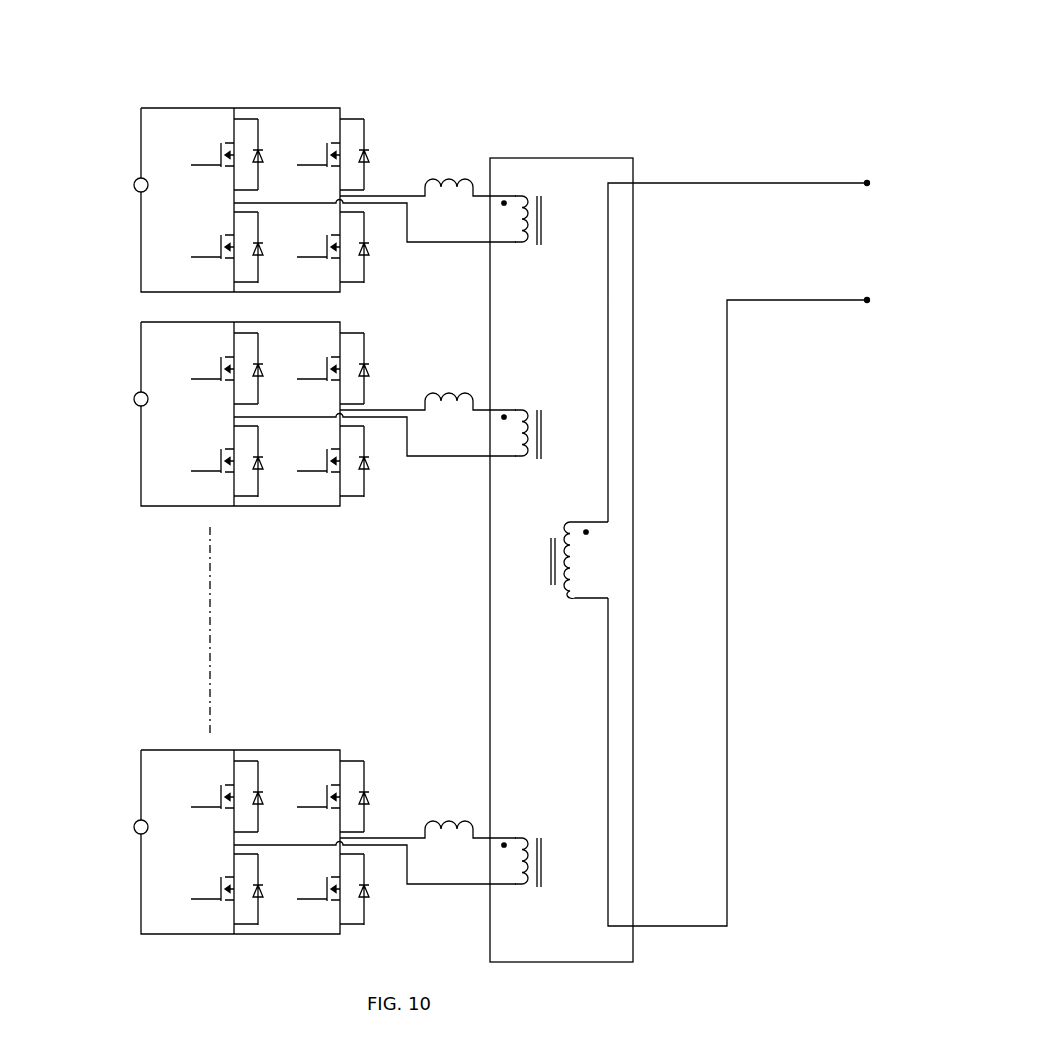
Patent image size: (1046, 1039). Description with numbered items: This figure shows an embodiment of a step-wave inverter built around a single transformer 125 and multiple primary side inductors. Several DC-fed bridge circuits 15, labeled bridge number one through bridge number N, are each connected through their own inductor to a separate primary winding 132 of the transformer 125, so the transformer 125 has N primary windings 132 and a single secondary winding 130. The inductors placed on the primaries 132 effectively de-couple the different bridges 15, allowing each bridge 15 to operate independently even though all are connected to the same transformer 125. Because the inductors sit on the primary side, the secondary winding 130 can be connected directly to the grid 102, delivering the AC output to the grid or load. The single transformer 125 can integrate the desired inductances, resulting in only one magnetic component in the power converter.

The bridge circuit 15 is at (217, 108).
The grid 102 is at (867, 146).
The transformer 125 is at (634, 168).
The secondary winding 130 is at (563, 596).
The primary winding 132 is at (513, 244).